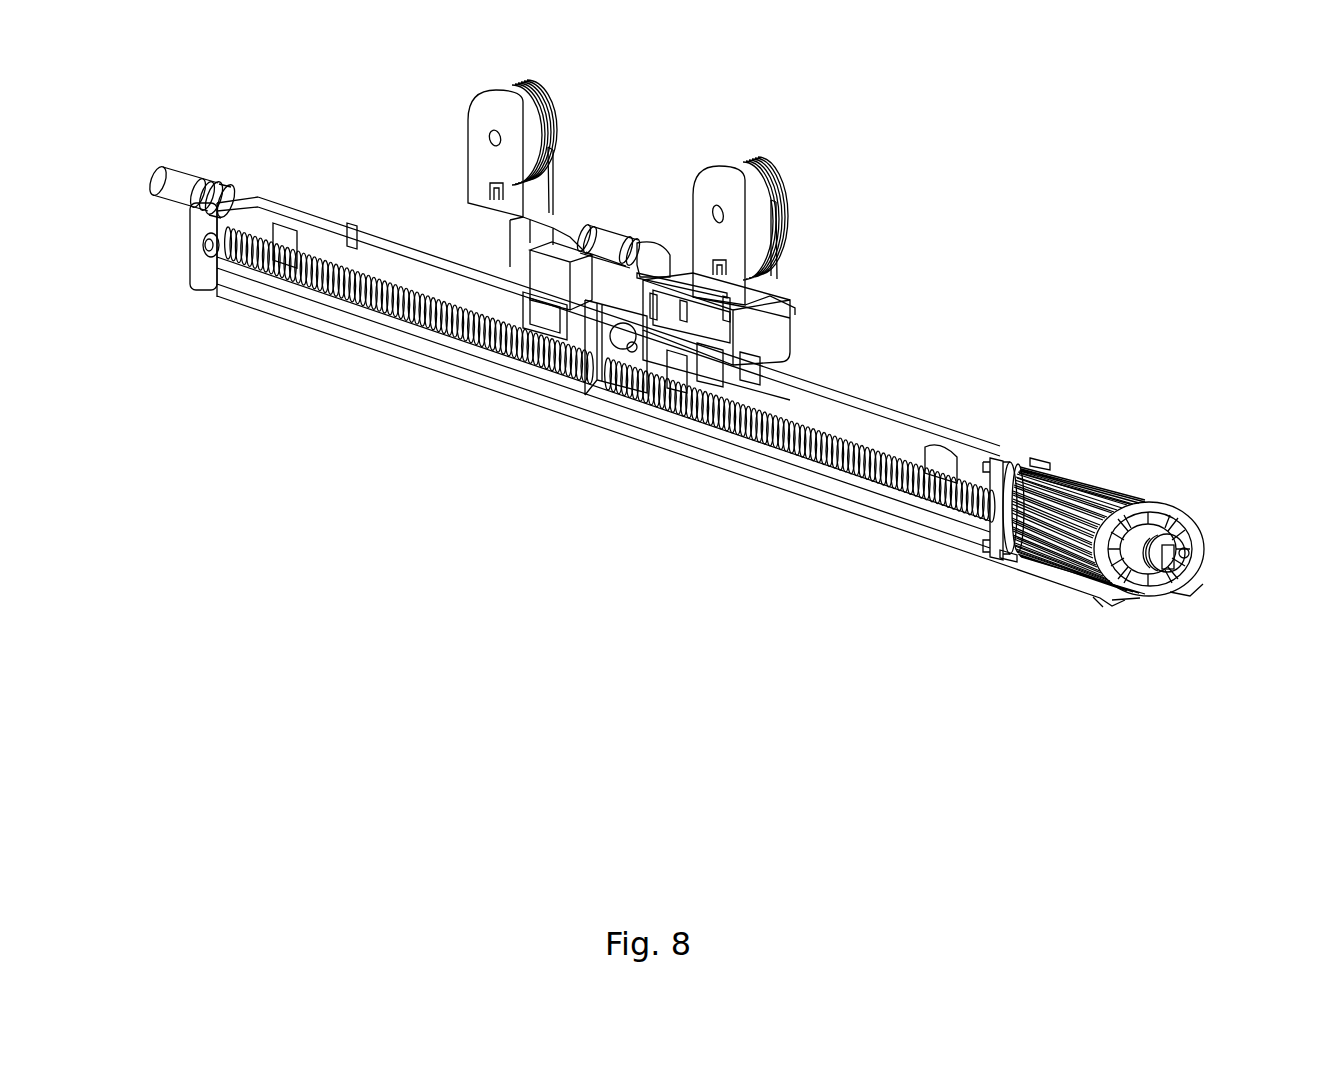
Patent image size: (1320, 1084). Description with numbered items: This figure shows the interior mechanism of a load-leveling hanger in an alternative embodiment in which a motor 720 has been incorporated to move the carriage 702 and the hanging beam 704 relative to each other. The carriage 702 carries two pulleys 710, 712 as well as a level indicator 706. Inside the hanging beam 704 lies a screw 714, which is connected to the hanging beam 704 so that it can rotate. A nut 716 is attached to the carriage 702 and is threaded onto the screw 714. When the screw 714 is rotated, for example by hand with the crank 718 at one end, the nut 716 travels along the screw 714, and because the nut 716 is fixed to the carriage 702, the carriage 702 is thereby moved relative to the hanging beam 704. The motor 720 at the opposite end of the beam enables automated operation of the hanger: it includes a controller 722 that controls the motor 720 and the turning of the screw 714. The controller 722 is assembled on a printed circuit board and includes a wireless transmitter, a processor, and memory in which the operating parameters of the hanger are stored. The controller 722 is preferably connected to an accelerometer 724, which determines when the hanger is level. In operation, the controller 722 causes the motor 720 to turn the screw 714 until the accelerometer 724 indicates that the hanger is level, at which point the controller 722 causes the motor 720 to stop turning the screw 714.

The carriage 702 is at (773, 327).
The hanging beam 704 is at (365, 338).
The level indicator 706 is at (612, 236).
The pulley 710 is at (770, 207).
The pulley 712 is at (537, 130).
The screw 714 is at (280, 282).
The nut 716 is at (610, 388).
The crank 718 is at (172, 168).
The motor 720 is at (1190, 517).
The controller 722 is at (1130, 577).
The accelerometer 724 is at (1200, 555).